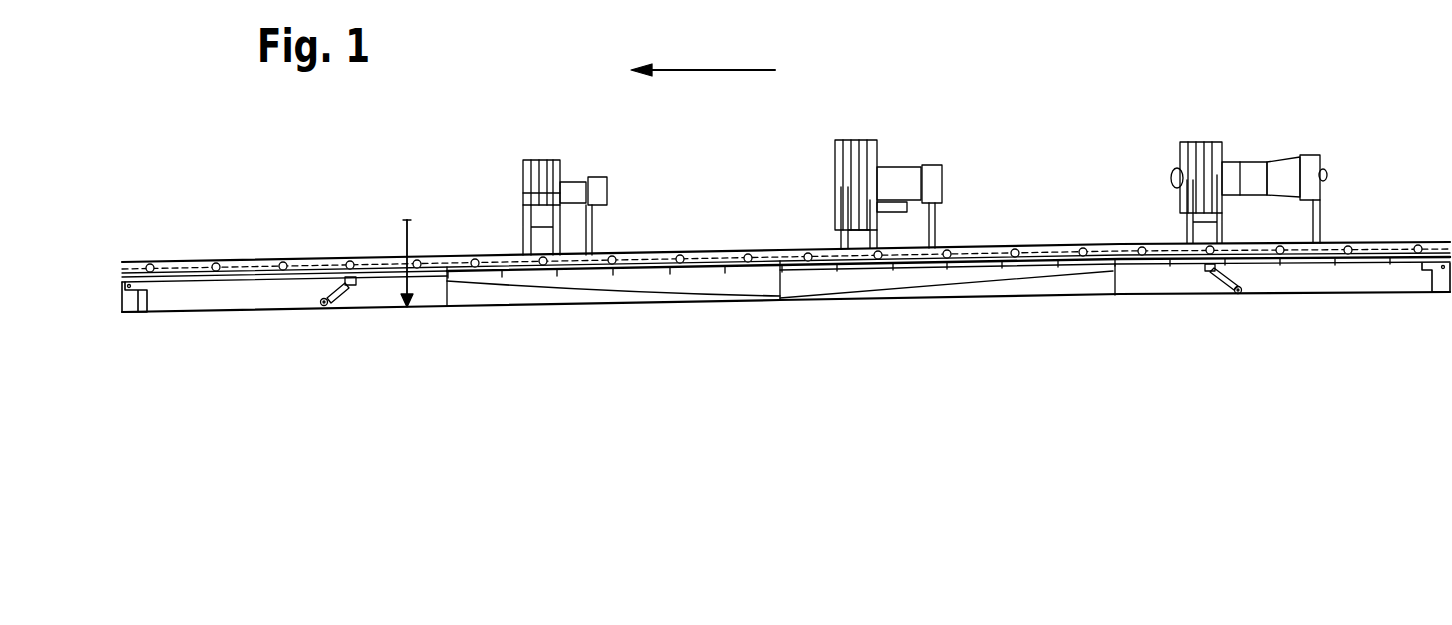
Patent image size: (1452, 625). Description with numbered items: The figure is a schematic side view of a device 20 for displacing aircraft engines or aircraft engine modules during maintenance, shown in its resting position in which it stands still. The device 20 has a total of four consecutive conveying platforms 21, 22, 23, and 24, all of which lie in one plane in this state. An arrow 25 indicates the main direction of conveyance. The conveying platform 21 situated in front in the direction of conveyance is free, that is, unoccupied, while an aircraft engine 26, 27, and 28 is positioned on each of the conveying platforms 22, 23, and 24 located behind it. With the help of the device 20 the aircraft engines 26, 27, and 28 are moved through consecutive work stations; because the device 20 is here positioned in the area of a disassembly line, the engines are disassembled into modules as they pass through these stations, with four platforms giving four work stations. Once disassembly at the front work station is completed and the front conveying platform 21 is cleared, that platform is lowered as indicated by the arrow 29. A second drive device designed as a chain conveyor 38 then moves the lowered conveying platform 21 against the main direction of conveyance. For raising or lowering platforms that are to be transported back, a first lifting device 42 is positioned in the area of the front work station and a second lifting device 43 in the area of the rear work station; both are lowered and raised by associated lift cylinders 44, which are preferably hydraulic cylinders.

The device 20 is at (638, 332).
The conveying platform 21 is at (303, 263).
The conveying platform 22 is at (700, 256).
The conveying platform 23 is at (1038, 254).
The conveying platform 24 is at (1375, 247).
The arrow 25 is at (720, 70).
The aircraft engine 26 is at (557, 168).
The aircraft engine 27 is at (858, 153).
The aircraft engine 28 is at (1205, 152).
The arrow 29 is at (407, 238).
The chain conveyor 38 is at (712, 300).
The first lifting device 42 is at (252, 286).
The second lifting device 43 is at (1328, 270).
The lift cylinder 44 is at (348, 305).